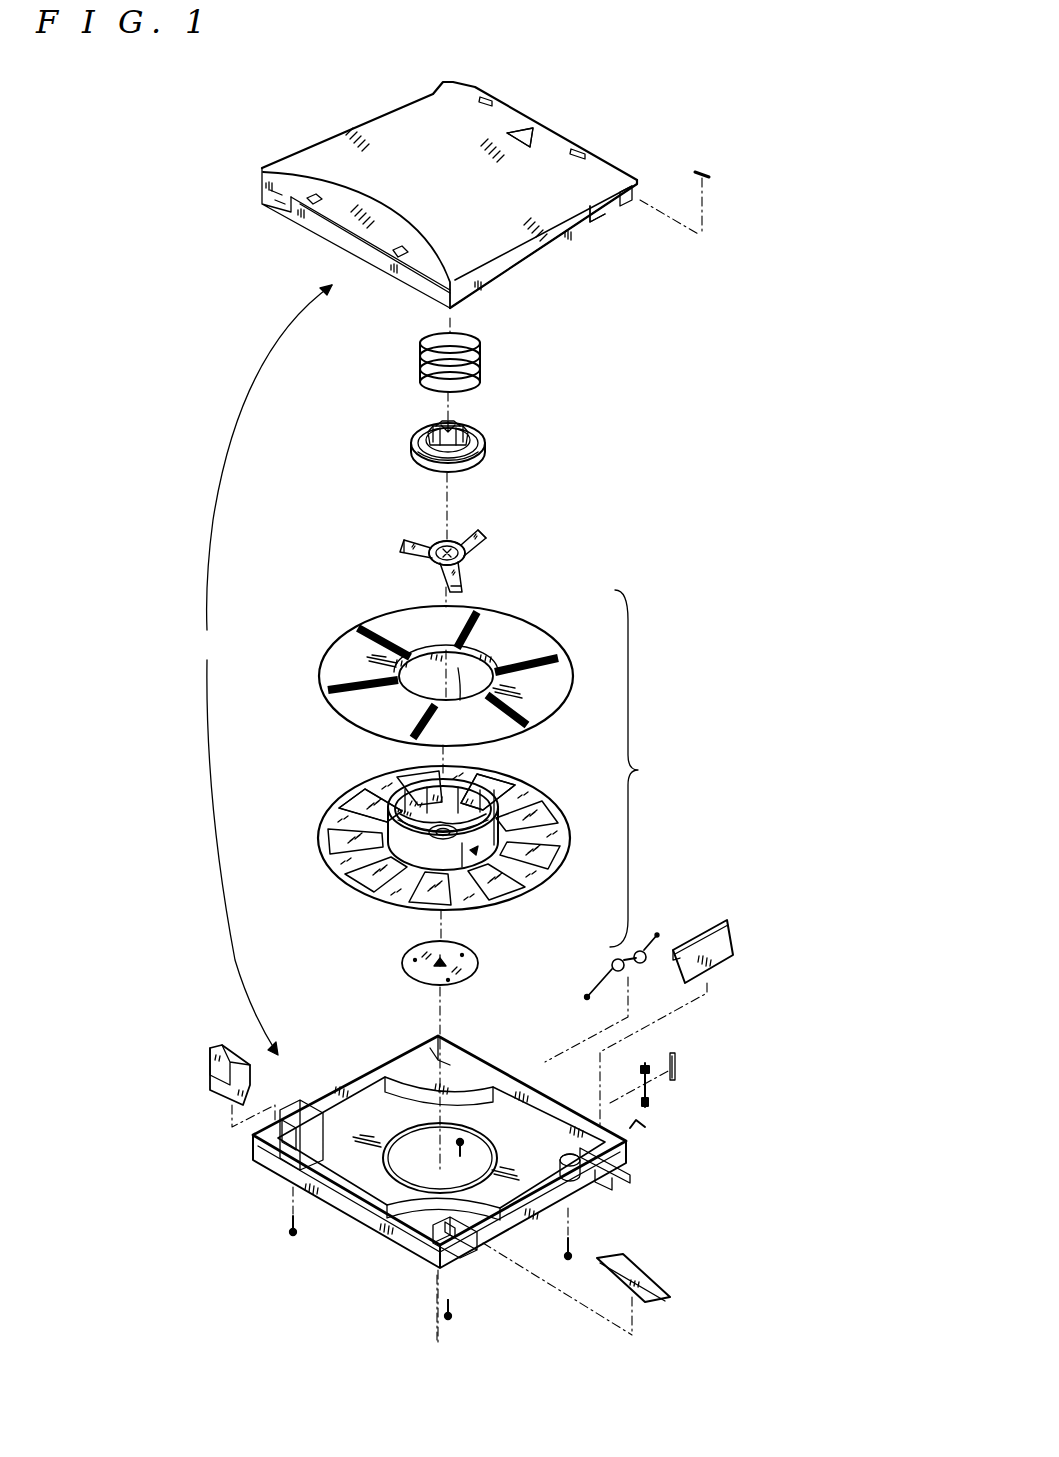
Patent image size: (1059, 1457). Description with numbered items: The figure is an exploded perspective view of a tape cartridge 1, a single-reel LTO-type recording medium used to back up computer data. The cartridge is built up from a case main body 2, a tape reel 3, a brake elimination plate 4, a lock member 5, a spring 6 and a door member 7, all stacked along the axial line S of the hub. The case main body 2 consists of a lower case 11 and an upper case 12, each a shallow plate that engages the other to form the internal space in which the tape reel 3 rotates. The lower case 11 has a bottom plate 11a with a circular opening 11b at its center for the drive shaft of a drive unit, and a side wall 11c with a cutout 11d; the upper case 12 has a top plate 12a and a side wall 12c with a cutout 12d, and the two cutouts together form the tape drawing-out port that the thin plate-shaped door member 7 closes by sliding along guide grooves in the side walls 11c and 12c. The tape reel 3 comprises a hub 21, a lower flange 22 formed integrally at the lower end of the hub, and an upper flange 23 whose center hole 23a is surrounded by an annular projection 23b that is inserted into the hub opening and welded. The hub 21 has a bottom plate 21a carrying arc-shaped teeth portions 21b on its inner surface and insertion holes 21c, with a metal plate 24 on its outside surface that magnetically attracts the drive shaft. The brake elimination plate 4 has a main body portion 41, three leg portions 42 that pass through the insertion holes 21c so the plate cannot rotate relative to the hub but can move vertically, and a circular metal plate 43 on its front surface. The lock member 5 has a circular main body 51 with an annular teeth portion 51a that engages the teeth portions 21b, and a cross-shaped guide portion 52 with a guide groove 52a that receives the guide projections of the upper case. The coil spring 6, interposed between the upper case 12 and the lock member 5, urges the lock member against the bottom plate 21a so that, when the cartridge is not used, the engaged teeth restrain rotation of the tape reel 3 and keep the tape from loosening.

The tape cartridge 1 is at (298, 104).
The case main body 2 is at (264, 670).
The tape reel 3 is at (636, 768).
The brake elimination plate 4 is at (440, 542).
The lock member 5 is at (465, 444).
The spring 6 is at (483, 360).
The door member 7 is at (727, 963).
The lower case 11 is at (470, 1158).
The bottom plate 11a is at (500, 1120).
The circular opening 11b is at (418, 1156).
The side wall 11c is at (510, 1220).
The cutout 11d is at (600, 1180).
The upper case 12 is at (570, 126).
The top plate 12a is at (497, 120).
The side wall 12c is at (543, 243).
The cutout 12d is at (605, 209).
The hub 21 is at (442, 826).
The bottom plate 21a is at (398, 781).
The teeth portions 21b is at (402, 776).
The insertion holes 21c is at (482, 800).
The lower flange 22 is at (540, 818).
The upper flange 23 is at (467, 656).
The center hole 23a is at (432, 668).
The annular projection 23b is at (464, 703).
The metal plate 24 is at (470, 960).
The main body portion 41 is at (470, 558).
The leg portions 42 is at (398, 562).
The metal plate 43 is at (450, 544).
The main body 51 is at (486, 446).
The teeth portion 51a is at (463, 466).
The guide portion 52 is at (477, 430).
The guide groove 52a is at (443, 428).
The axial line S is at (437, 1313).